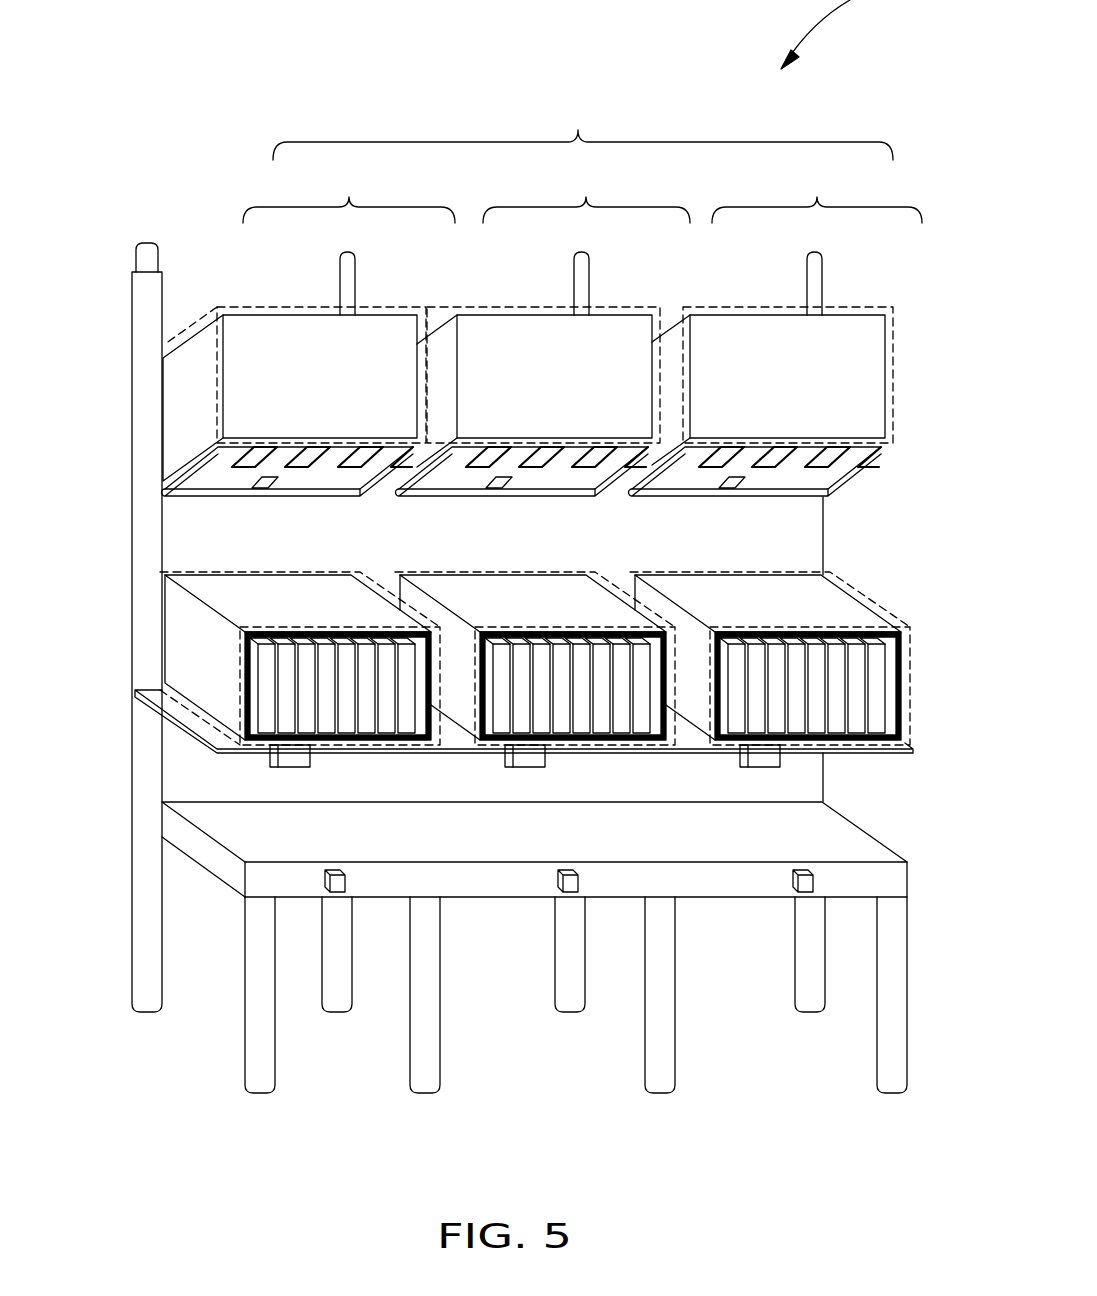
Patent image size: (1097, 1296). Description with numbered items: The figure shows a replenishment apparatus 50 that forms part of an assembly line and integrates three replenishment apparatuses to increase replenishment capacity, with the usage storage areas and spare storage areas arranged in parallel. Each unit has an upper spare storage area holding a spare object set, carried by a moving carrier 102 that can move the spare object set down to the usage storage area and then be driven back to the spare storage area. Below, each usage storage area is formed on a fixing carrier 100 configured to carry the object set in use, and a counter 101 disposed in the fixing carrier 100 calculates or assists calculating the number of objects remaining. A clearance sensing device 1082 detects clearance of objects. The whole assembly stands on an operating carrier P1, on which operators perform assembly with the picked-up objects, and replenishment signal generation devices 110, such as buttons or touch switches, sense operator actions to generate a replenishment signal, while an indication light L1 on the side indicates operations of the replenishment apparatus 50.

The replenishment apparatus 50 is at (583, 121).
The indication light L1 is at (148, 242).
The moving carrier 102 is at (218, 473).
The clearance sensing device 1082 is at (243, 480).
The fixing carrier 100 is at (376, 754).
The counter 101 is at (288, 769).
The operating carrier P1 is at (867, 853).
The replenishment signal generation device 110 is at (325, 876).